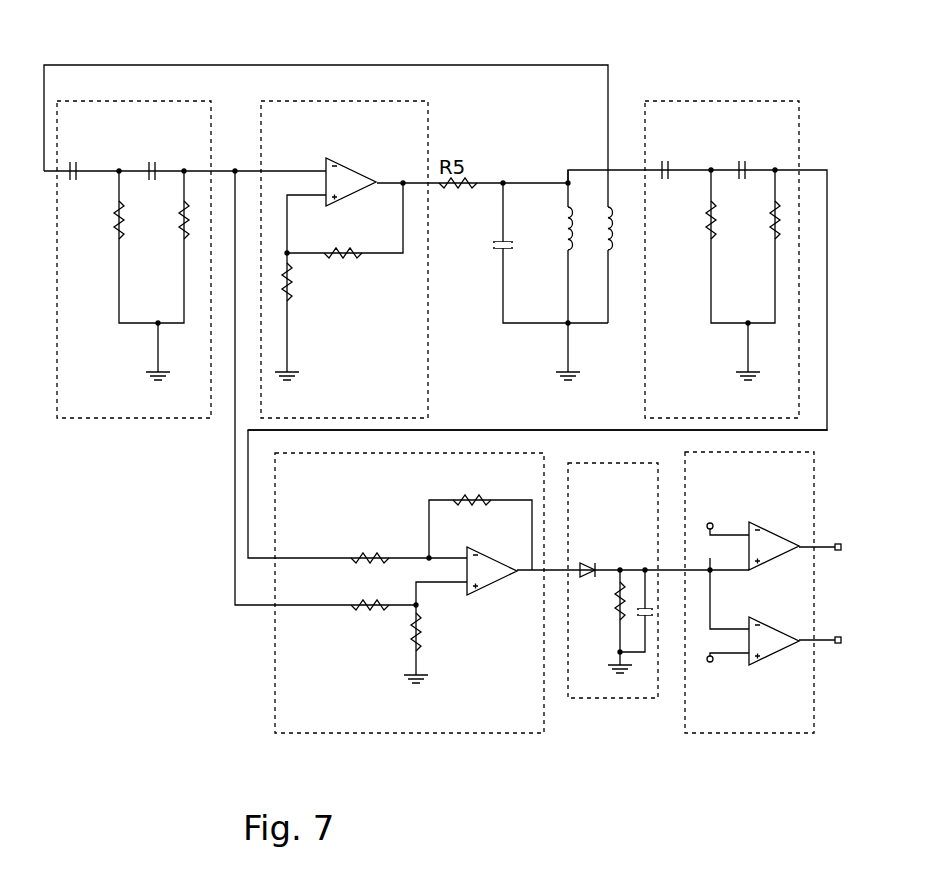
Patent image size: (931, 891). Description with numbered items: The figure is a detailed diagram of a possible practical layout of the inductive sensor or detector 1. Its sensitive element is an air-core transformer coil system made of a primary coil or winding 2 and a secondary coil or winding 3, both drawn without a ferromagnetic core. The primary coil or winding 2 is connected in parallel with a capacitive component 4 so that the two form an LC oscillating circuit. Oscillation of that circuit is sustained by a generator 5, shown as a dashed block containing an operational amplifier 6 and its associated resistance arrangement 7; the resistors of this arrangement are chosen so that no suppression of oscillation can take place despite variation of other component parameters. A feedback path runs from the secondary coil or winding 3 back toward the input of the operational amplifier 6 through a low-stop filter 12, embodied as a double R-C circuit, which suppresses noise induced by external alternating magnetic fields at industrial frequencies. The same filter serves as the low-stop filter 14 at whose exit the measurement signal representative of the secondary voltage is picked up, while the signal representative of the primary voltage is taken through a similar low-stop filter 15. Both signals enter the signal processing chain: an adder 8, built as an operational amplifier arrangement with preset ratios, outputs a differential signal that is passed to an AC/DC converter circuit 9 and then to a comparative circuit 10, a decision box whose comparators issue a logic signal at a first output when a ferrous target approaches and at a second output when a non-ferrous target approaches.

The sensor or detector 1 is at (127, 682).
The primary coil or winding 2 is at (560, 243).
The secondary coil or winding 3 is at (613, 237).
The capacitive component 4 is at (482, 255).
The generator 5 is at (320, 90).
The operational amplifier 6 is at (347, 178).
The resistance arrangement 7 is at (323, 287).
The adder 8 is at (410, 740).
The AC/DC converter circuit 9 is at (612, 705).
The comparative circuit 10 is at (753, 740).
The low-stop filter 12 is at (127, 425).
The low-stop filter 14 is at (134, 259).
The low-stop filter 15 is at (737, 92).